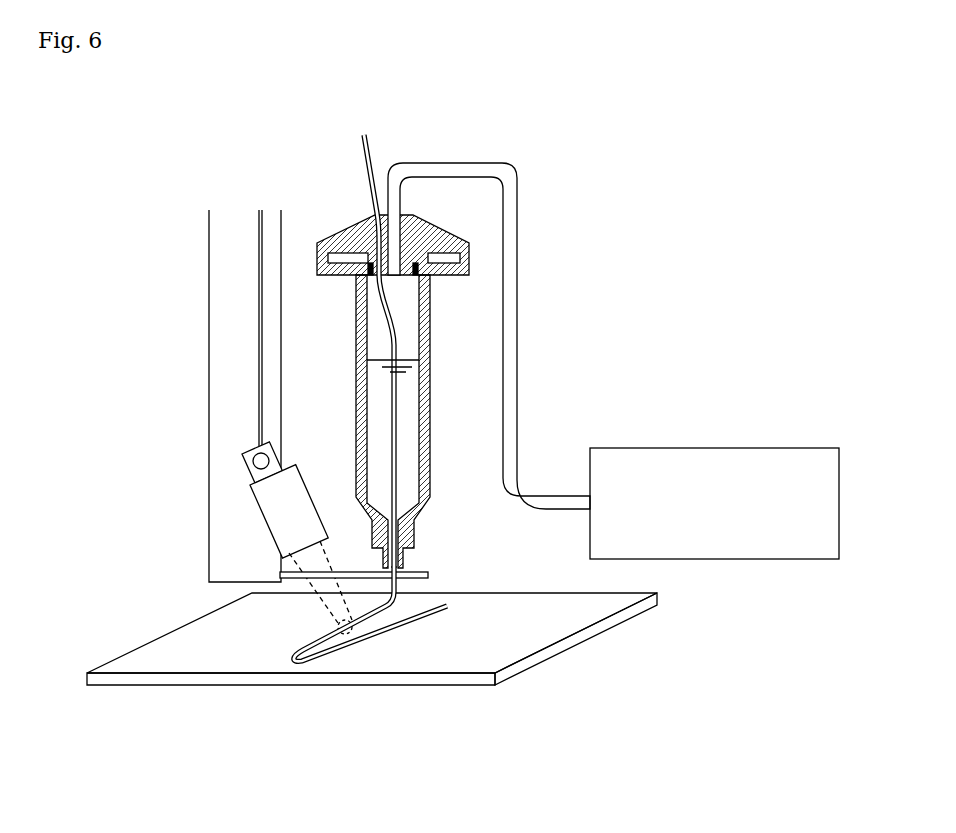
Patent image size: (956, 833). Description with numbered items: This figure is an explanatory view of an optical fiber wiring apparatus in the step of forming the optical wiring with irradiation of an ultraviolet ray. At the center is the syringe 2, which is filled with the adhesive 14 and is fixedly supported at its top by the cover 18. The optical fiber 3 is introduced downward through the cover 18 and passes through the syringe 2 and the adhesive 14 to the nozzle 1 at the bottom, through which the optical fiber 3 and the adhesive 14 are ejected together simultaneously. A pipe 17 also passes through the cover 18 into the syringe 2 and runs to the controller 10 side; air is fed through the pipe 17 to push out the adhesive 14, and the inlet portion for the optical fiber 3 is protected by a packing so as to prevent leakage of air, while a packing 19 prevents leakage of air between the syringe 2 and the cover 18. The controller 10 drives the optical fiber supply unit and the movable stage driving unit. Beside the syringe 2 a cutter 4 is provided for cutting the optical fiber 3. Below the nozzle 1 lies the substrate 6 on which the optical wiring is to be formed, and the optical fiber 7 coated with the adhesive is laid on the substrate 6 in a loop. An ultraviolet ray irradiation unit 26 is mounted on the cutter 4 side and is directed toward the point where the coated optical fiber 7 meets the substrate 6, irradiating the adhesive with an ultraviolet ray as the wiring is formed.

The nozzle 1 is at (402, 560).
The syringe 2 is at (357, 313).
The optical fiber 3 is at (375, 143).
The cutter 4 is at (220, 335).
The substrate 6 is at (558, 617).
The optical fiber coated with the adhesive 7 is at (313, 661).
The controller 10 is at (703, 458).
The adhesive 14 is at (430, 445).
The pipe 17 is at (512, 243).
The cover 18 is at (350, 228).
The packing 19 is at (430, 312).
The ultraviolet ray irradiation unit 26 is at (263, 505).